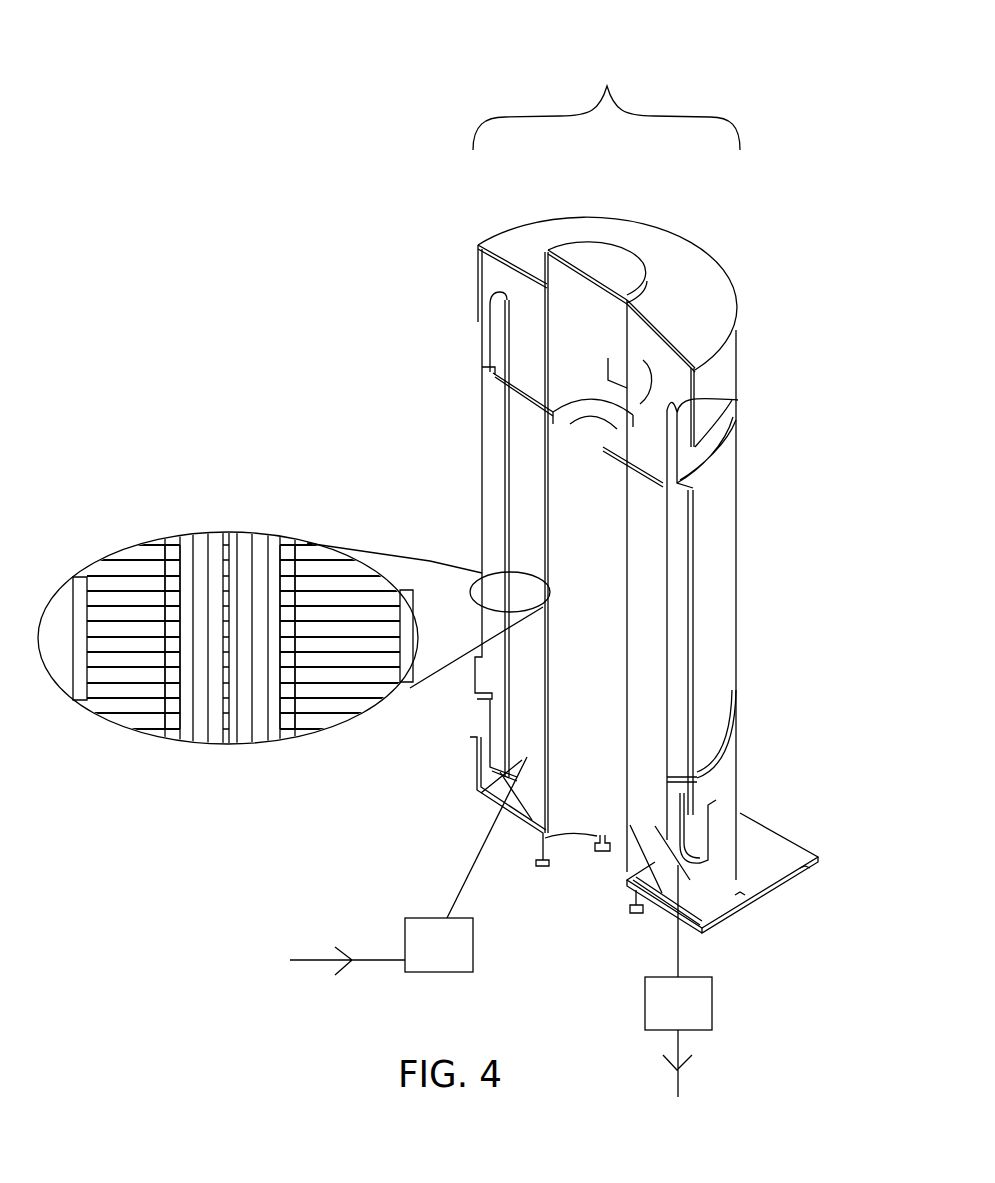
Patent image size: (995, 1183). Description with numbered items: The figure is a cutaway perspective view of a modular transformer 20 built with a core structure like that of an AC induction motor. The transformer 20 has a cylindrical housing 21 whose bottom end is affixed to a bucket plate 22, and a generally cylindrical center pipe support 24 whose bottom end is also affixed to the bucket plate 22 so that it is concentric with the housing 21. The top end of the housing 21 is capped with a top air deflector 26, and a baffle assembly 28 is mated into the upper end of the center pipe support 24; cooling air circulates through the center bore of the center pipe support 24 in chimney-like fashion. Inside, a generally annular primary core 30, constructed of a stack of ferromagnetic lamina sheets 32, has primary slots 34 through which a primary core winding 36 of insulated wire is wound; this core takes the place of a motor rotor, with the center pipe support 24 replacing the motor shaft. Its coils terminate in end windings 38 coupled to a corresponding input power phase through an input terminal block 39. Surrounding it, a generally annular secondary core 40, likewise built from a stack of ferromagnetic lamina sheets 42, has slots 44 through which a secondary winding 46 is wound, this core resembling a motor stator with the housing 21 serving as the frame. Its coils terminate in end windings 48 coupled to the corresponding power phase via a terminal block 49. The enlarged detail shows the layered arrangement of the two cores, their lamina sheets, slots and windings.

The transformer 20 is at (620, 58).
The cylindrical housing 21 is at (766, 596).
The bucket plate 22 is at (767, 870).
The center pipe support 24 is at (587, 773).
The top air deflector 26 is at (478, 262).
The baffle assembly 28 is at (600, 262).
The primary core 30 is at (520, 503).
The ferromagnetic lamina sheets 32 is at (325, 565).
The primary slots 34 is at (290, 745).
The primary core winding 36 is at (500, 783).
The end windings 38 is at (483, 383).
The input terminal block 39 is at (452, 956).
The secondary core 40 is at (495, 445).
The ferromagnetic lamina sheets 42 is at (113, 708).
The slots 44 is at (172, 735).
The secondary winding 46 is at (190, 555).
The end windings 48 is at (483, 322).
The input terminal block 49 is at (691, 1015).